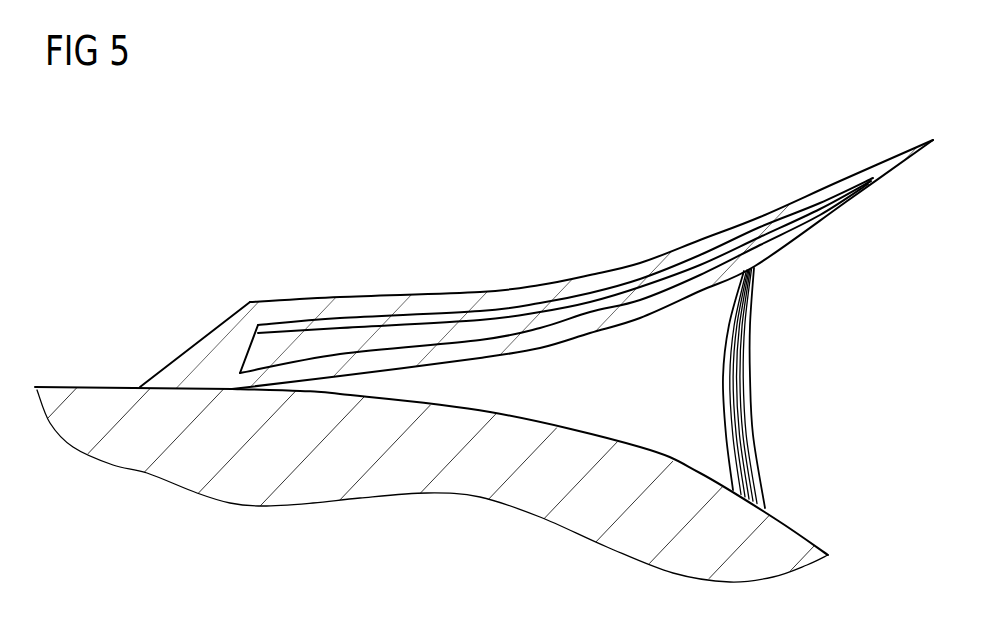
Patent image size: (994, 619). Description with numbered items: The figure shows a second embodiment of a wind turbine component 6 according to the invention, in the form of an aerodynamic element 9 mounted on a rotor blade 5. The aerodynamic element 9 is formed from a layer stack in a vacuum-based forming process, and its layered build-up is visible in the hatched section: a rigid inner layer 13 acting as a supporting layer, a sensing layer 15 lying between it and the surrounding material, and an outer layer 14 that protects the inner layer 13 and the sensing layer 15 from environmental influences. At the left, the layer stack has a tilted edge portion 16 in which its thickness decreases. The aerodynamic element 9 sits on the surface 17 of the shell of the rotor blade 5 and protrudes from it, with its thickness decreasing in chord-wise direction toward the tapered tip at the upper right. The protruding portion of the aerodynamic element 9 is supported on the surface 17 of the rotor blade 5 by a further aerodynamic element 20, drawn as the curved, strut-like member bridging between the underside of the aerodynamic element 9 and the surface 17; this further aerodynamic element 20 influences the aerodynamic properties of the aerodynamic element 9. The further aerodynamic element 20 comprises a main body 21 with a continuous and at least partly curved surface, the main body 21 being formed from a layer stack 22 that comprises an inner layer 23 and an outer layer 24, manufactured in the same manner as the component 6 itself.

The rotor blade 5 is at (780, 532).
The wind turbine component 6 is at (757, 388).
The aerodynamic element 9 is at (803, 152).
The inner layer 13 is at (527, 320).
The outer layer 14 is at (323, 307).
The sensing layer 15 is at (423, 317).
The tilted edge portion 16 is at (210, 348).
The surface 17 is at (643, 448).
The further aerodynamic element 20 is at (750, 443).
The main body 21 is at (753, 300).
The layer stack 22 is at (750, 386).
The inner layer 23 is at (749, 363).
The outer layer 24 is at (751, 397).